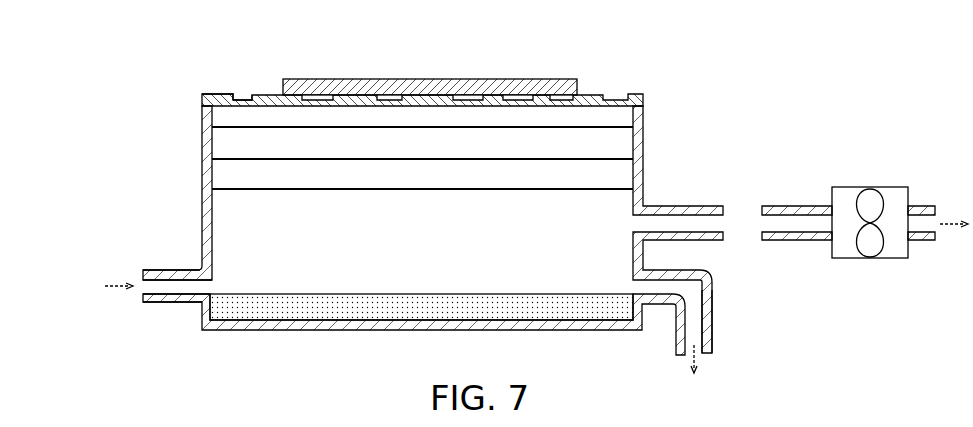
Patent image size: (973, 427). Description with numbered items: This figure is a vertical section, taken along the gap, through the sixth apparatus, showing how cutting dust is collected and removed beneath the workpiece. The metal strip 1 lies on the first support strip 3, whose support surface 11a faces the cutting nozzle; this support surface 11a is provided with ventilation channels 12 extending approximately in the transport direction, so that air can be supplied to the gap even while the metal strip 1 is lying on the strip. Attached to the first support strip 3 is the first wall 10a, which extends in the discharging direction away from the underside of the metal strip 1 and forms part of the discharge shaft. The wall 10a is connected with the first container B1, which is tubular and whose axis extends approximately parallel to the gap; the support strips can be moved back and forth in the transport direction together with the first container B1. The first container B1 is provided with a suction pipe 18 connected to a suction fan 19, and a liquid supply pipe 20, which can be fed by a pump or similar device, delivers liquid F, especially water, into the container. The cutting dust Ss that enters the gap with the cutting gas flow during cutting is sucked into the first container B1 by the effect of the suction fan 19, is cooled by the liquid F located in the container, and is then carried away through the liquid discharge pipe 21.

The metal strip 1 is at (513, 79).
The first support strip 3 is at (595, 94).
The support surface 11a is at (215, 94).
The ventilation channels 12 is at (247, 100).
The first wall 10a is at (218, 134).
The first container B1 is at (213, 185).
The suction pipe 18 is at (700, 204).
The suction fan 19 is at (845, 187).
The liquid supply pipe 20 is at (165, 303).
The liquid discharge pipe 21 is at (712, 322).
The cutting dust Ss is at (267, 300).
The liquid F is at (420, 300).